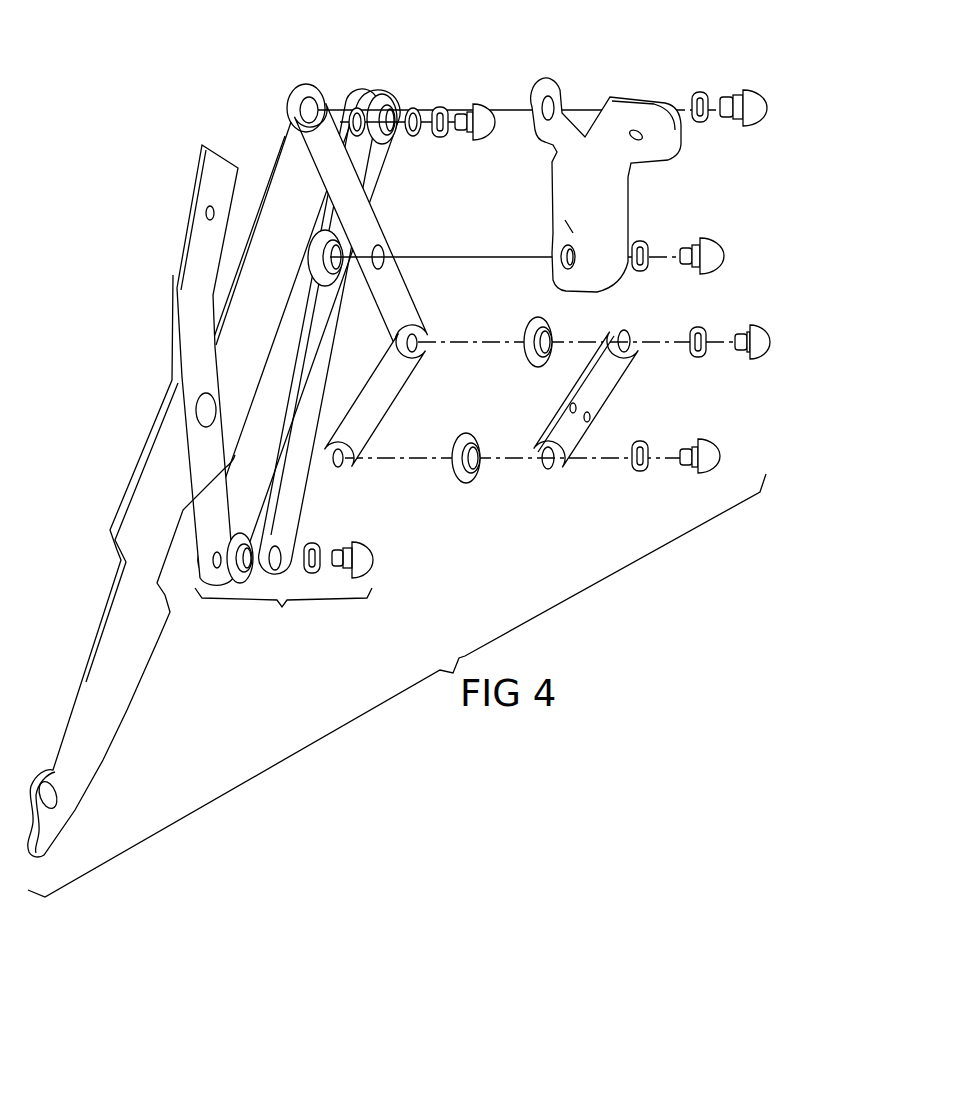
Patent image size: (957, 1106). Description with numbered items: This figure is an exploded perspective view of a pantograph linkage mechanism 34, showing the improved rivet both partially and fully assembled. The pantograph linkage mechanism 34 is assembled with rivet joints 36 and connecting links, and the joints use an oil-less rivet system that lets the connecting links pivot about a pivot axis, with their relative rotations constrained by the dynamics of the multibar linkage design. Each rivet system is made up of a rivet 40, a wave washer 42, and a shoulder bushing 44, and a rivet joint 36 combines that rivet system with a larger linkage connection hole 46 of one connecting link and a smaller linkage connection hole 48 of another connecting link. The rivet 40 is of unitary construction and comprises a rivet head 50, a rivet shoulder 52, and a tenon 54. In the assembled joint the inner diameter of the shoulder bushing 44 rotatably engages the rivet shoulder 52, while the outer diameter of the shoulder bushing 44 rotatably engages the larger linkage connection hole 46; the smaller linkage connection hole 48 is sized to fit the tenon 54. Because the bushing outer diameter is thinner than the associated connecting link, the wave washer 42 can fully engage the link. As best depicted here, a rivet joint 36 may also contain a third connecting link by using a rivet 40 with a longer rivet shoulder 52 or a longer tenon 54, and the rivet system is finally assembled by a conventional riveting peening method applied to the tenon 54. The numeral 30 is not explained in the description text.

The scissor link arms 30 is at (270, 228).
The pantograph linkage mechanism 34 is at (97, 243).
The rivet joint 36 is at (150, 363).
The rivet 40 is at (688, 484).
The wave washer 42 is at (641, 471).
The shoulder bushing 44 is at (490, 496).
The larger linkage connection hole 46 is at (588, 423).
The smaller linkage connection hole 48 is at (347, 453).
The rivet head 50 is at (756, 97).
The rivet shoulder 52 is at (740, 96).
The tenon 54 is at (724, 97).